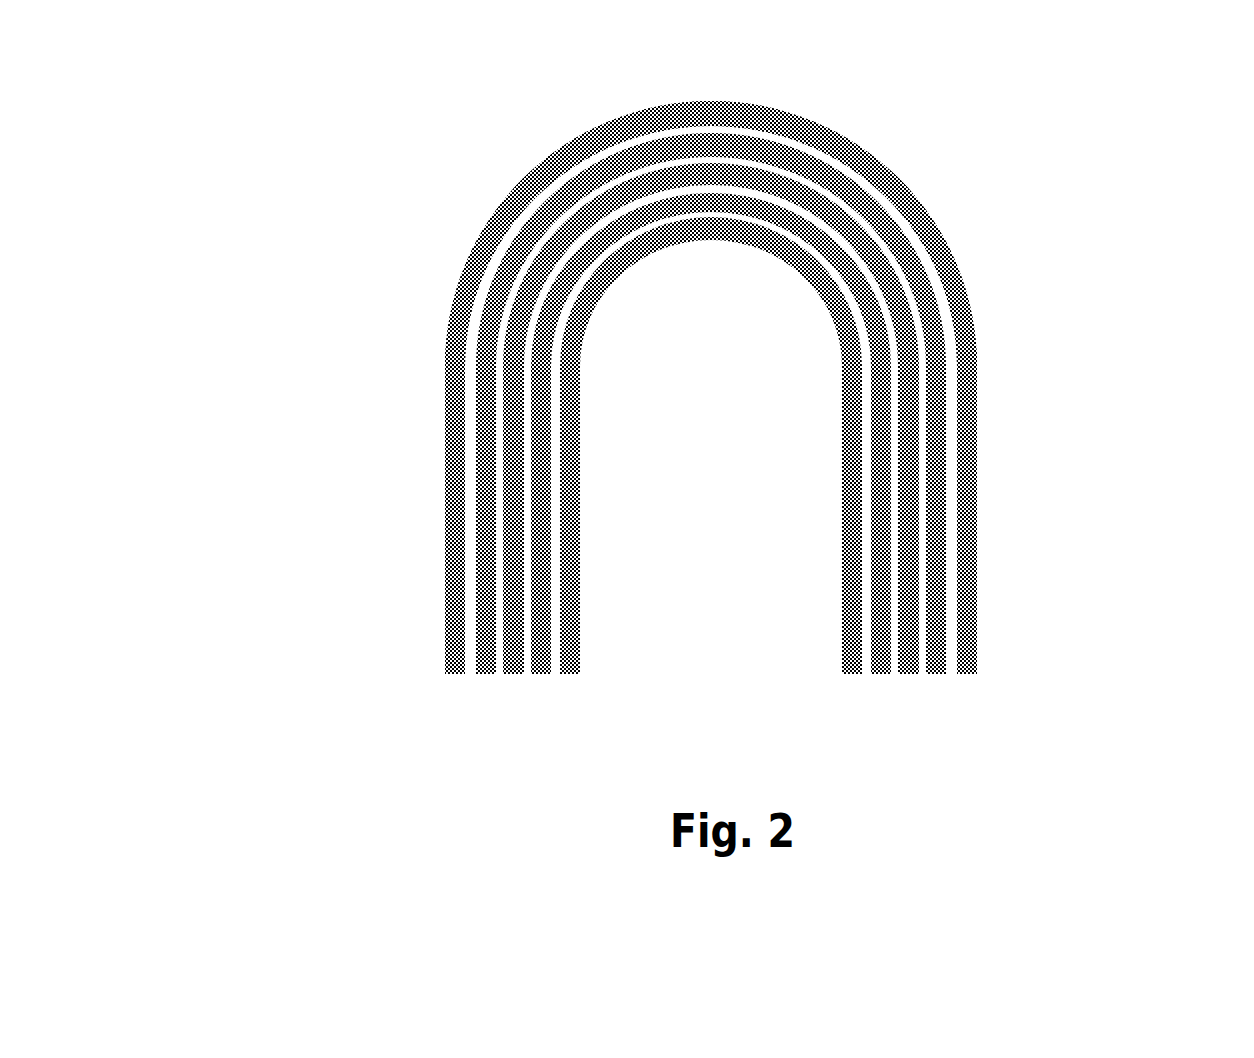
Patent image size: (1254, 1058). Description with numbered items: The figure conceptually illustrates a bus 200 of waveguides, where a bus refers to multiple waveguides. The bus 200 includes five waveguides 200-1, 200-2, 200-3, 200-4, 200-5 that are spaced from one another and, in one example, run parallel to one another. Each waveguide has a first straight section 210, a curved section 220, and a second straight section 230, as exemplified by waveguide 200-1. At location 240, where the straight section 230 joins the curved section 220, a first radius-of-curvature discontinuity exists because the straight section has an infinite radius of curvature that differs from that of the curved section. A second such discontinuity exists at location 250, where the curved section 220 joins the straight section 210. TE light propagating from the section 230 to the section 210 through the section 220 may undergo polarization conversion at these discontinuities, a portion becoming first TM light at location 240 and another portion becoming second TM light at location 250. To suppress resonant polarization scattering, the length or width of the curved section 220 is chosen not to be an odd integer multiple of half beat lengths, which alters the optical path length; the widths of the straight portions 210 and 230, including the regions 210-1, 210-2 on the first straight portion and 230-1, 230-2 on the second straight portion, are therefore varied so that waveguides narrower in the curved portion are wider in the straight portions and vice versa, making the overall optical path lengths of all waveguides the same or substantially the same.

The bus 200 is at (405, 52).
The waveguide 200-1 is at (977, 674).
The waveguide 200-2 is at (935, 674).
The waveguide 200-3 is at (903, 674).
The waveguide 200-4 is at (882, 674).
The waveguide 200-5 is at (845, 674).
The first straight section 210 is at (414, 507).
The first region of first portion 210-1 is at (447, 463).
The second region of first portion 210-2 is at (447, 377).
The curved section 220 is at (717, 80).
The second straight section 230 is at (1013, 523).
The first region of second portion 230-1 is at (977, 473).
The second region of second portion 230-2 is at (977, 390).
The location of first ROC discontinuity 240 is at (977, 363).
The location of second ROC discontinuity 250 is at (442, 358).